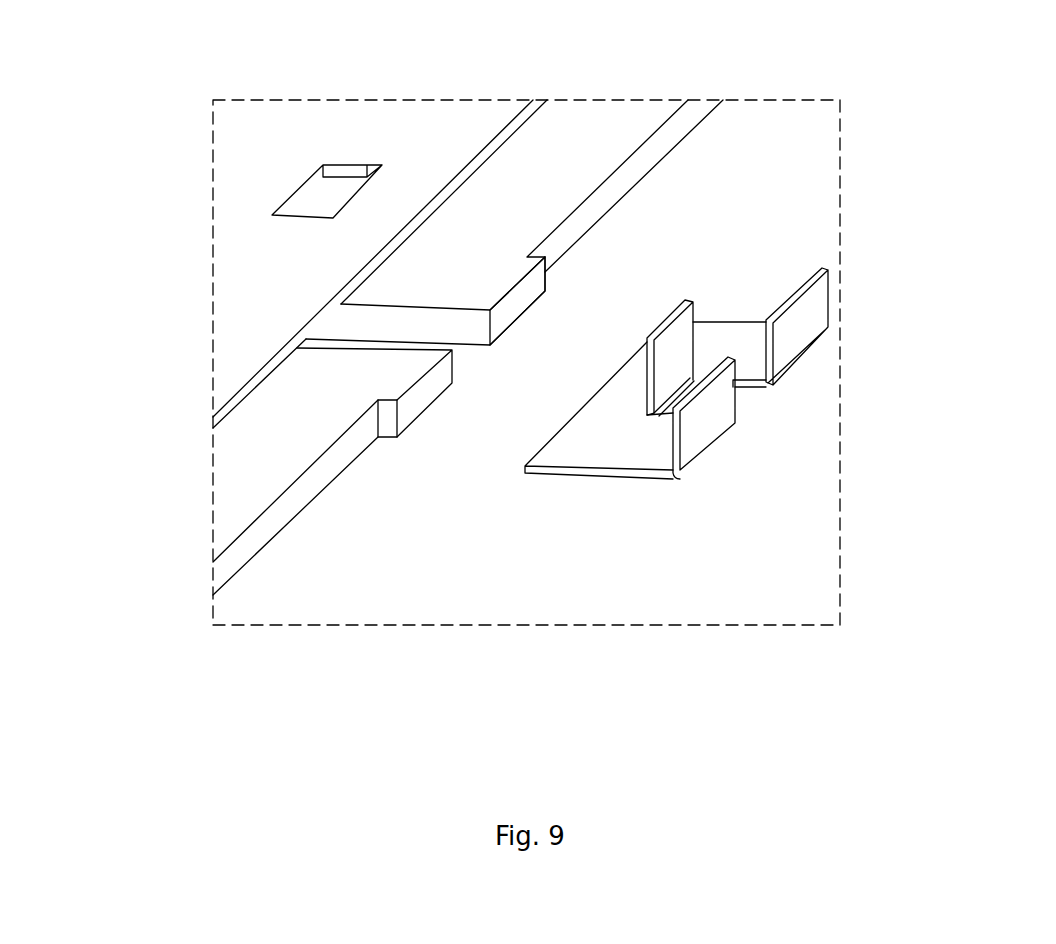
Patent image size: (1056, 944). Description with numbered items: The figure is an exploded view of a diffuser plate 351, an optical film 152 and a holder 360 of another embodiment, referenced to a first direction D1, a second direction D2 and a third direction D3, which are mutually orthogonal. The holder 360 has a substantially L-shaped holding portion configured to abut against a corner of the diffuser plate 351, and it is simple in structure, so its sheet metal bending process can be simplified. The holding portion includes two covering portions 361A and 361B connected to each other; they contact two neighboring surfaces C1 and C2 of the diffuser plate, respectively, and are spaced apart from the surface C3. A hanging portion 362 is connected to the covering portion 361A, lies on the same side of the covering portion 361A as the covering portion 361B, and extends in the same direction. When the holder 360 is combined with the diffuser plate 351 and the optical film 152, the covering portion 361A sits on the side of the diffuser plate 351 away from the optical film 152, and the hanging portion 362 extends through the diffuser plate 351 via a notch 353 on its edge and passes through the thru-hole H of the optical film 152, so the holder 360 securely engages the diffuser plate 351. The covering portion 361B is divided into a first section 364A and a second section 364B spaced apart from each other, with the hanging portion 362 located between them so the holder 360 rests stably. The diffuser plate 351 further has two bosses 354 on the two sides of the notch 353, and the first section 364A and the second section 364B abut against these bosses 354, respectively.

The thru-hole H is at (337, 185).
The optical film 152 is at (432, 126).
The diffuser plate 351 is at (595, 127).
The notch 353 is at (464, 359).
The boss 354 is at (512, 307).
The holder 360 is at (523, 490).
The covering portion 361A is at (620, 461).
The covering portion 361B is at (940, 325).
The hanging portion 362 is at (677, 312).
The first section 364A is at (717, 413).
The second section 364B is at (790, 334).
The surface C1 is at (280, 565).
The surface C2 is at (213, 584).
The surface C3 is at (212, 520).
The first direction D1 is at (940, 652).
The second direction D2 is at (940, 652).
The third direction D3 is at (940, 652).